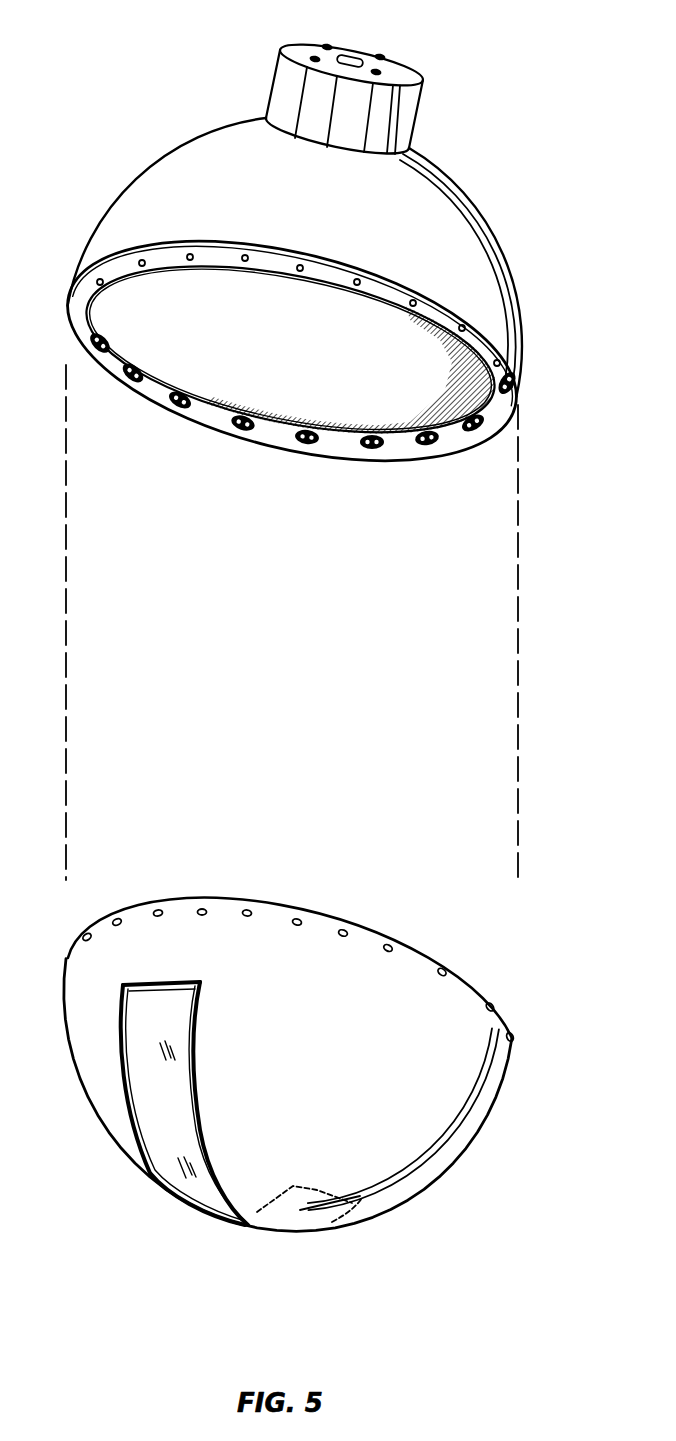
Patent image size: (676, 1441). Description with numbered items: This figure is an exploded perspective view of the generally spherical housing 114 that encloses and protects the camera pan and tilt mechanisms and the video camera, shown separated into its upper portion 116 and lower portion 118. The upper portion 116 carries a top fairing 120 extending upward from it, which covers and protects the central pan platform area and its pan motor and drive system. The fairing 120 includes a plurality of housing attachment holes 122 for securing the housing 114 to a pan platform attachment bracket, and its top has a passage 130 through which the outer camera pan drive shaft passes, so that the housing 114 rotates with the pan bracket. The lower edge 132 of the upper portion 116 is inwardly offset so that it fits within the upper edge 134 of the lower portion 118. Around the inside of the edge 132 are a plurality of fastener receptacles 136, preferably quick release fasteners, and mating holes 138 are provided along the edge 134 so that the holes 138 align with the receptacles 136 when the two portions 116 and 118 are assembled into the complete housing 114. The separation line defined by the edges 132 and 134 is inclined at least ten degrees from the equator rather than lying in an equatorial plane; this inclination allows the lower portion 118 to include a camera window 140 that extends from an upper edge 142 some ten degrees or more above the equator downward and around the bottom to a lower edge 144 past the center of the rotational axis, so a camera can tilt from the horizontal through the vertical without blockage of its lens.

The housing 114 is at (392, 1266).
The housing upper portion 116 is at (123, 191).
The housing lower portion 118 is at (485, 1124).
The top fairing 120 is at (274, 80).
The housing attachment holes 122 is at (312, 46).
The passage 130 is at (349, 46).
The lower edge of housing upper portion 132 is at (270, 273).
The upper edge of housing lower portion 134 is at (313, 910).
The fastener receptacles 136 is at (230, 432).
The mating holes 138 is at (247, 918).
The camera window 140 is at (185, 1103).
The upper edge of camera window 142 is at (148, 984).
The lower edge of camera window 144 is at (318, 1186).